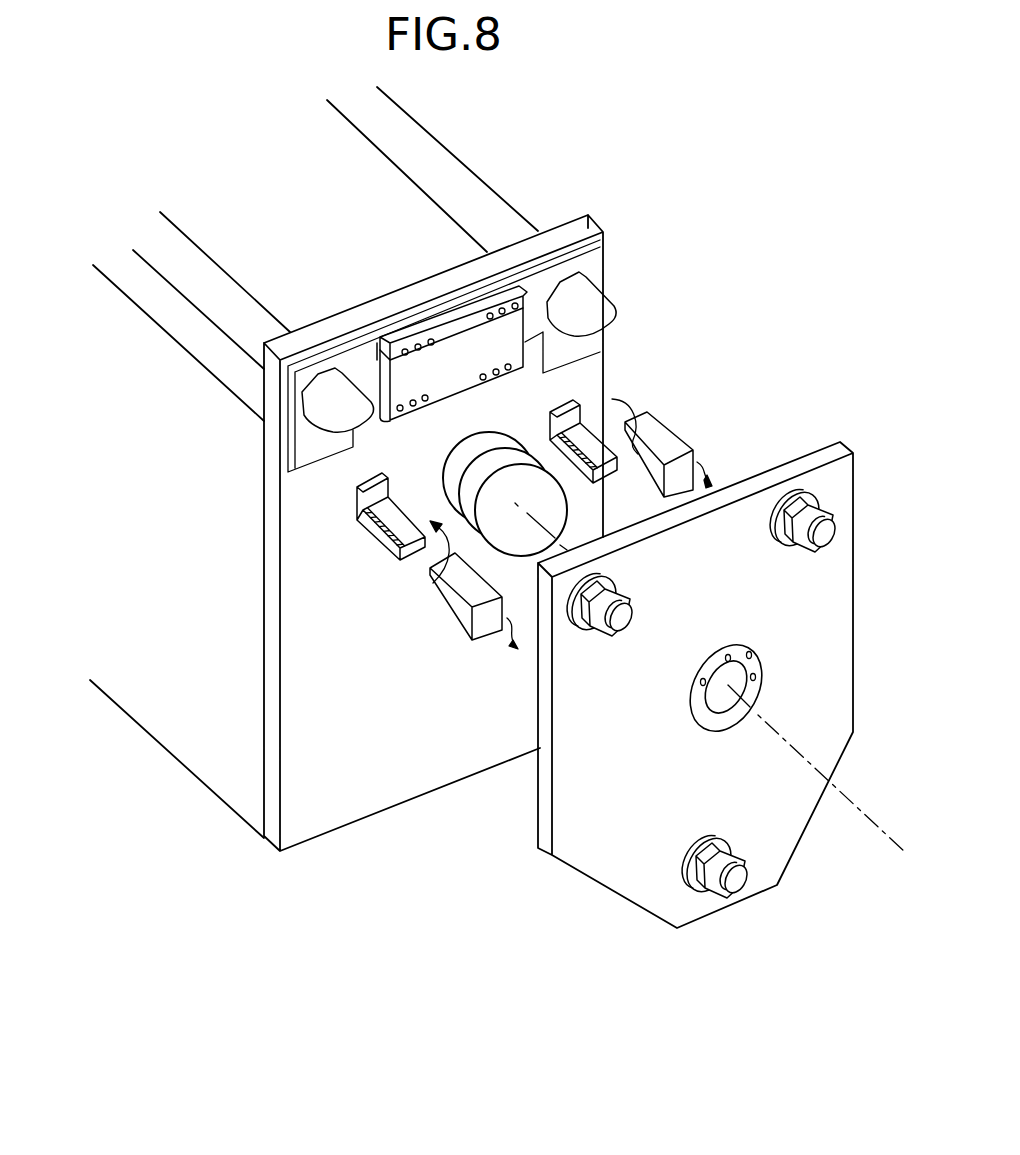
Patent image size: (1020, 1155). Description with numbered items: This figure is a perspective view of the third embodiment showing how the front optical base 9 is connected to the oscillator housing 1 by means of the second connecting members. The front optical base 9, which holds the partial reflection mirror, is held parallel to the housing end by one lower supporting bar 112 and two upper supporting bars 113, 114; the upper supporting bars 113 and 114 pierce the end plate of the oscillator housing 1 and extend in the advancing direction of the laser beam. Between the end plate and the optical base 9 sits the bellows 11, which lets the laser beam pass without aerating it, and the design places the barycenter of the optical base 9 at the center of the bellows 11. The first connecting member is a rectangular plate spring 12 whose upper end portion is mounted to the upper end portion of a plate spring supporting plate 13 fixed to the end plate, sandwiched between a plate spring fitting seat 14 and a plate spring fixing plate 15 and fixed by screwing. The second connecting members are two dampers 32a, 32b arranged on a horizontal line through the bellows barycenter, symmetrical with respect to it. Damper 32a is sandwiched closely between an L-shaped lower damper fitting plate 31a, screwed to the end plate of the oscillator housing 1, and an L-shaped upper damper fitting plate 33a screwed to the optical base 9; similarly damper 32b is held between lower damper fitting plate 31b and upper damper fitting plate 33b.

The oscillator housing 1 is at (134, 507).
The front optical base 9 is at (857, 610).
The bellows 11 is at (479, 432).
The plate spring 12 is at (370, 362).
The plate spring supporting plate 13 is at (600, 268).
The plate spring fitting seat 14 is at (430, 318).
The plate spring fixing plate 15 is at (470, 305).
The lower damper fitting plate 31a is at (580, 403).
The lower damper fitting plate 31b is at (388, 488).
The damper 32a is at (596, 426).
The damper 32b is at (372, 513).
The upper damper fitting plate 33a is at (673, 430).
The upper damper fitting plate 33b is at (455, 602).
The lower supporting bar 112 is at (730, 900).
The upper supporting bar 113 is at (220, 278).
The upper supporting bar 114 is at (475, 192).